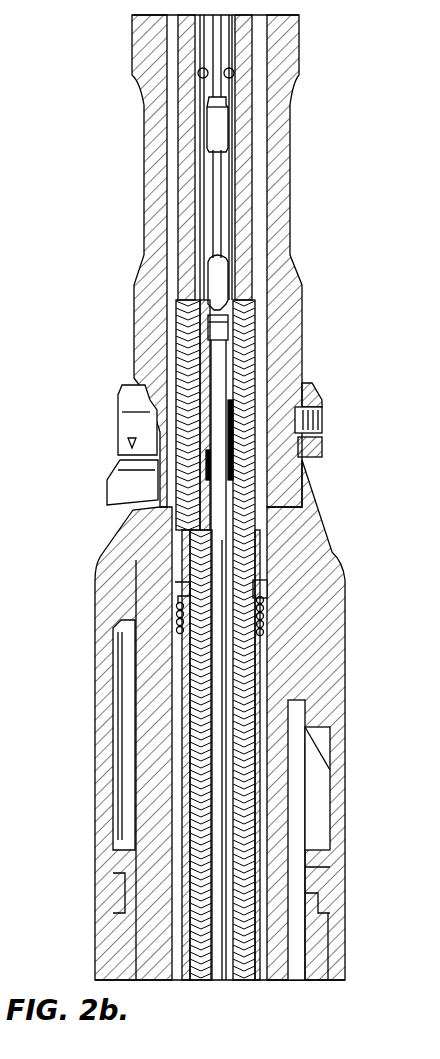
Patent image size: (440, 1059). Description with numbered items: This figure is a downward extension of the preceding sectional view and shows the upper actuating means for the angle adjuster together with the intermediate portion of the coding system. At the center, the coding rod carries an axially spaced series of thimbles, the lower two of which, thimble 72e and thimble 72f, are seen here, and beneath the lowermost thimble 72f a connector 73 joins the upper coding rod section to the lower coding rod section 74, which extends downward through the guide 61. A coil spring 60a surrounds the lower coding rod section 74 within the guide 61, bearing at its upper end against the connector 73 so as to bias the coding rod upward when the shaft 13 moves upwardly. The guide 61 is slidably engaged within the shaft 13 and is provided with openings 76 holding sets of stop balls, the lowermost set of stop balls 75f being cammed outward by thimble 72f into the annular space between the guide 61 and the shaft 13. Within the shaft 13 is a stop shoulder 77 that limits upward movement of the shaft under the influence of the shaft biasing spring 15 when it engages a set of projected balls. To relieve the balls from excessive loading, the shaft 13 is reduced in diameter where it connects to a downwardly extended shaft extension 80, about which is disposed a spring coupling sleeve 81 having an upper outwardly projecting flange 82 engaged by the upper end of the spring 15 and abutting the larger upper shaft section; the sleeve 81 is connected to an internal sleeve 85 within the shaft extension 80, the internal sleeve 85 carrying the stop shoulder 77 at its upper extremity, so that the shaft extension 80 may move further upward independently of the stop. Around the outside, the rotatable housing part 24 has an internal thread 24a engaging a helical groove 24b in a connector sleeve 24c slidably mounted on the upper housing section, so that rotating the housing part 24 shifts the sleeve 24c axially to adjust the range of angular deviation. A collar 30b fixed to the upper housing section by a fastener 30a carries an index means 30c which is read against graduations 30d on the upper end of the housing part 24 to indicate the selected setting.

The shaft 13 is at (255, 183).
The shaft biasing spring 15 is at (265, 605).
The housing part 24 is at (348, 824).
The internal thread 24a is at (112, 765).
The helical groove 24b is at (318, 890).
The connector sleeve 24c is at (318, 958).
The fastener 30a is at (322, 416).
The collar 30b is at (318, 395).
The index means 30c is at (130, 440).
The graduations 30d is at (118, 468).
The coil spring 60a is at (236, 470).
The guide 61 is at (202, 660).
The thimble 72e is at (215, 135).
The thimble 72f is at (210, 278).
The connector 73 is at (185, 362).
The lower coding rod section 74 is at (222, 500).
The stop balls 75f is at (200, 76).
The openings 76 is at (232, 73).
The stop shoulder 77 is at (205, 314).
The shaft extension 80 is at (175, 600).
The spring coupling sleeve 81 is at (258, 690).
The flange 82 is at (265, 590).
The internal sleeve 85 is at (240, 356).